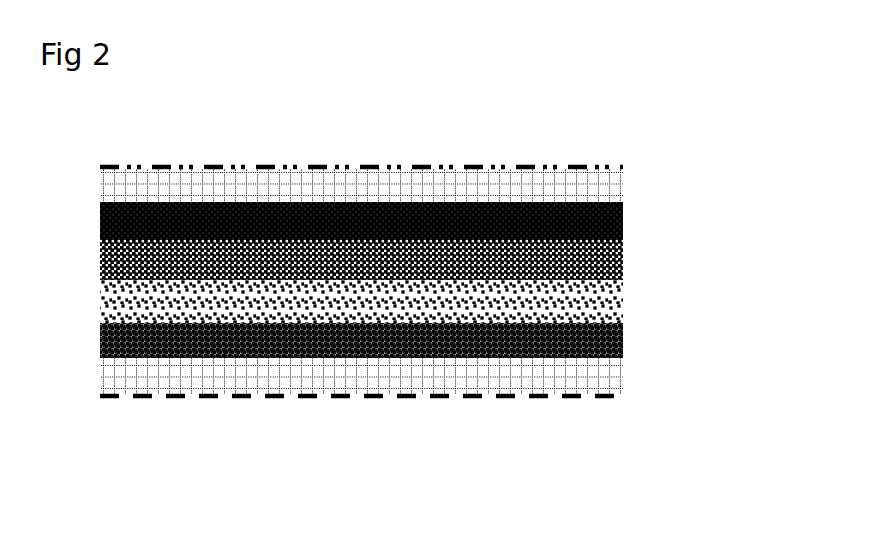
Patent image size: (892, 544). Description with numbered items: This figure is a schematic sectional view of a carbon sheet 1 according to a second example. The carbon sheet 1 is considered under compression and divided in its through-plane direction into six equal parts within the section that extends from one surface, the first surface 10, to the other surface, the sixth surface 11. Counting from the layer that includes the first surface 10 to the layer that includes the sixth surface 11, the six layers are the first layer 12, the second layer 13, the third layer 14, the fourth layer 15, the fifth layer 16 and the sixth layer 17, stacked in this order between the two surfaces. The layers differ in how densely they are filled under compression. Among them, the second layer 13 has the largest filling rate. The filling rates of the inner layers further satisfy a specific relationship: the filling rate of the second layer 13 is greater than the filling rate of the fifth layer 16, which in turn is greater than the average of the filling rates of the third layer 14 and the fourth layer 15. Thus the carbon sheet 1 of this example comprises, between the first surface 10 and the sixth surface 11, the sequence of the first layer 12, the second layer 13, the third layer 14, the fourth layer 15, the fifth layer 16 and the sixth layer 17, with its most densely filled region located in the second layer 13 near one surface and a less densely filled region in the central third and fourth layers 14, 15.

The carbon sheet 1 is at (90, 166).
The surface 1 10 is at (492, 162).
The surface 6 11 is at (493, 403).
The layer 1 12 is at (590, 183).
The layer 2 13 is at (633, 204).
The layer 3 14 is at (633, 243).
The layer 4 15 is at (633, 283).
The layer 5 16 is at (633, 326).
The layer 6 17 is at (575, 385).